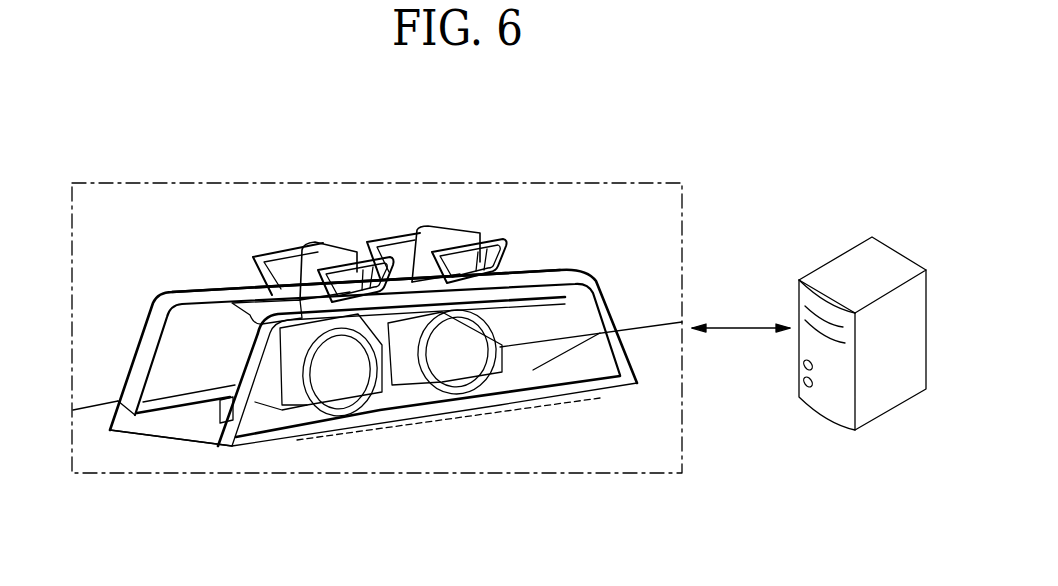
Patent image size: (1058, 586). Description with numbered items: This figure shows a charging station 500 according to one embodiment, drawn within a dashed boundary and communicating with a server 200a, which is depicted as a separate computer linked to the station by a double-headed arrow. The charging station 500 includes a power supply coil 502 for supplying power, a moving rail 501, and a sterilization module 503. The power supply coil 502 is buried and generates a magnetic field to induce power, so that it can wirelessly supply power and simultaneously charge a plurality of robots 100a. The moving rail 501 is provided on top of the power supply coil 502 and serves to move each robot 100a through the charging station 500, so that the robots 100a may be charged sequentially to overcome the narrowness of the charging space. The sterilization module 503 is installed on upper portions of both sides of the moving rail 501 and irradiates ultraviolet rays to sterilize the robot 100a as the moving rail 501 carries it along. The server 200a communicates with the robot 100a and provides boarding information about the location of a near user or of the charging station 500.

The robot 100a is at (445, 233).
The server 200a is at (832, 256).
The charging station 500 is at (560, 278).
The moving rail 501 is at (193, 430).
The power supply coil 502 is at (380, 437).
The sterilization module 503 is at (240, 291).